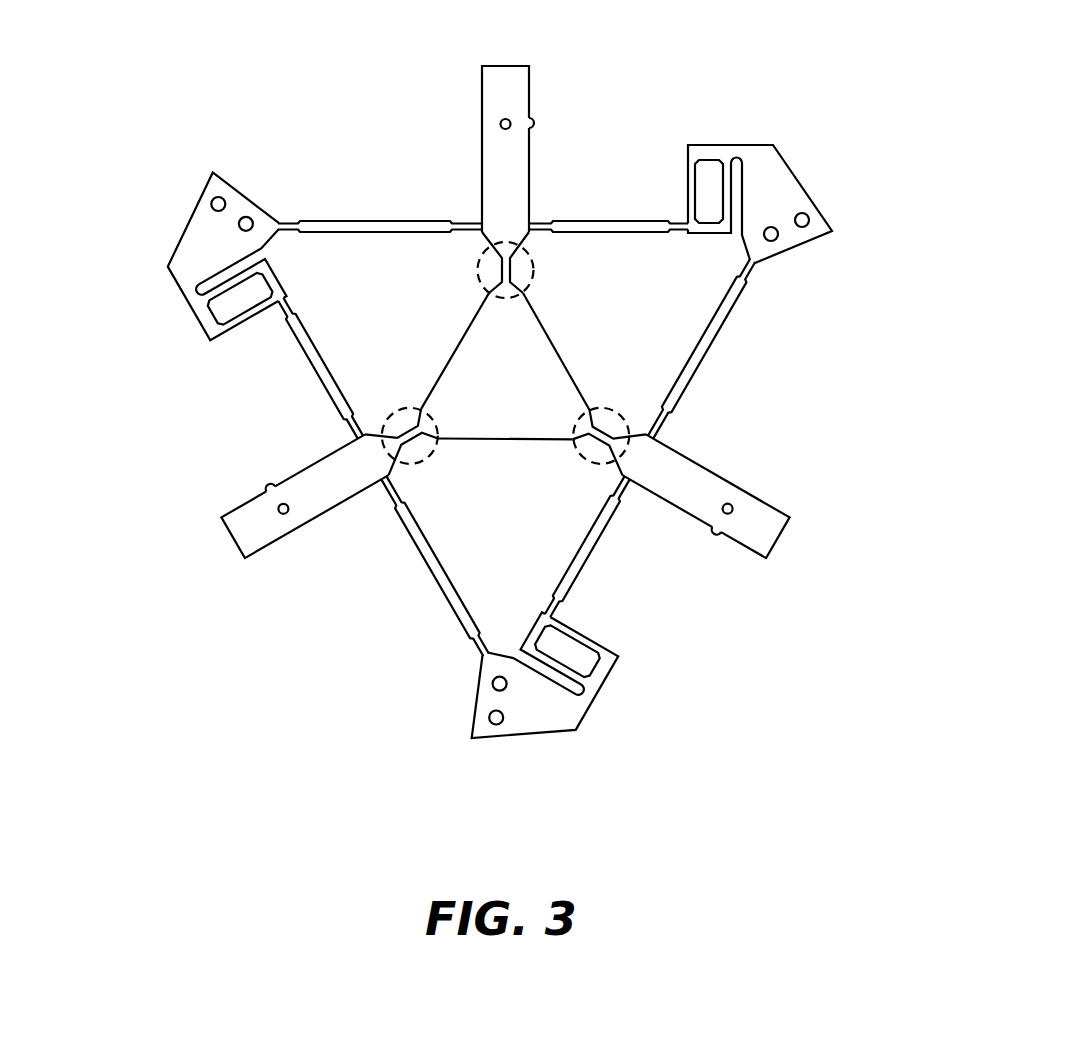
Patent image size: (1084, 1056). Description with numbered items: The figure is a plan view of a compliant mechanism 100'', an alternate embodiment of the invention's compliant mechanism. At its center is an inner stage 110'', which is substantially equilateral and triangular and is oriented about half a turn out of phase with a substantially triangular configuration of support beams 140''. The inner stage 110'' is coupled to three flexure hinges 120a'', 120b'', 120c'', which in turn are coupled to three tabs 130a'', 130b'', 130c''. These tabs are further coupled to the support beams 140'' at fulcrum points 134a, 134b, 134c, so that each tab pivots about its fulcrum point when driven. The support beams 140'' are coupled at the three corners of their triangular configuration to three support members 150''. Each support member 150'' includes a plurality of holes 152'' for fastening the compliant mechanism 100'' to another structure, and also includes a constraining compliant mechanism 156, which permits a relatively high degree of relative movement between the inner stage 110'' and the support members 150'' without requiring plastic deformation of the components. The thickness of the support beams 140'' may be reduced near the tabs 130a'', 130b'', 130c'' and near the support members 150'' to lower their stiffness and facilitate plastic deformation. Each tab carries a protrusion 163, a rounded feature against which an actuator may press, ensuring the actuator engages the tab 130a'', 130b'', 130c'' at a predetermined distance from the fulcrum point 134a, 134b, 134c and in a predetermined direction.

The compliant mechanism 100'' is at (502, 397).
The inner stage 110'' is at (505, 467).
The flexure hinge 120a'' is at (573, 275).
The flexure hinge 120b'' is at (620, 394).
The flexure hinge 120c'' is at (395, 394).
The tab 130a'' is at (575, 145).
The tab 130b'' is at (786, 496).
The tab 130c'' is at (222, 496).
The fulcrum point 134a is at (508, 226).
The fulcrum point 134b is at (642, 458).
The fulcrum point 134c is at (370, 455).
The support beam 140'' is at (604, 438).
The support member 150'' is at (500, 441).
The hole 152'' is at (499, 491).
The constraining compliant mechanism 156 is at (717, 136).
The protrusion 163 is at (533, 124).